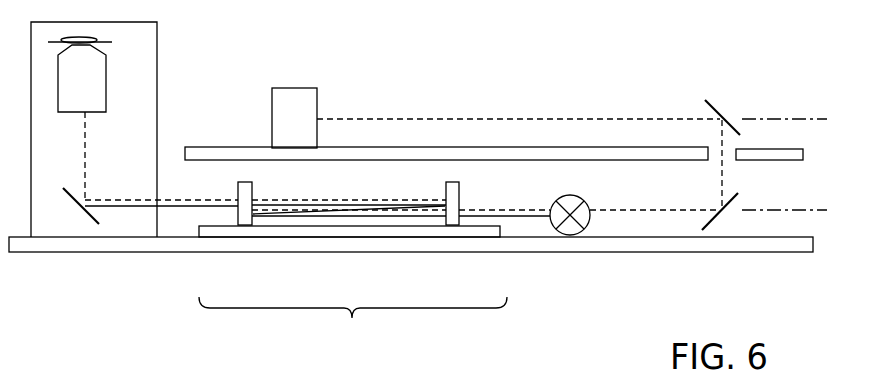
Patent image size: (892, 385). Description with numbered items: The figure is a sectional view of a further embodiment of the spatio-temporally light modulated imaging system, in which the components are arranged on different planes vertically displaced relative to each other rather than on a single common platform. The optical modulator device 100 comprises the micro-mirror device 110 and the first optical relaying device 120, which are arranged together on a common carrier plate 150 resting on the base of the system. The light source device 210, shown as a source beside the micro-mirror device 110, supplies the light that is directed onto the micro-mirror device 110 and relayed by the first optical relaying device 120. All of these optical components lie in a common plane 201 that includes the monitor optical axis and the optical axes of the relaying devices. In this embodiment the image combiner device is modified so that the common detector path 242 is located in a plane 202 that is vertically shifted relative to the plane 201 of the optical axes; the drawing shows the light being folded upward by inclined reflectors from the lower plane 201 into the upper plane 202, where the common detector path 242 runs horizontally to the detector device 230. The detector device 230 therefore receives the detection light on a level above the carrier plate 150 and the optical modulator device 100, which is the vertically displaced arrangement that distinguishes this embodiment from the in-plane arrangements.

The optical modulator device 100 is at (353, 325).
The micro-mirror device 110 is at (455, 202).
The first optical relaying device 120 is at (246, 202).
The carrier plate 150 is at (277, 232).
The plane 201 is at (755, 210).
The plane 202 is at (757, 119).
The light source device 210 is at (590, 208).
The detector device 230 is at (288, 110).
The common detector axis 242 is at (517, 119).